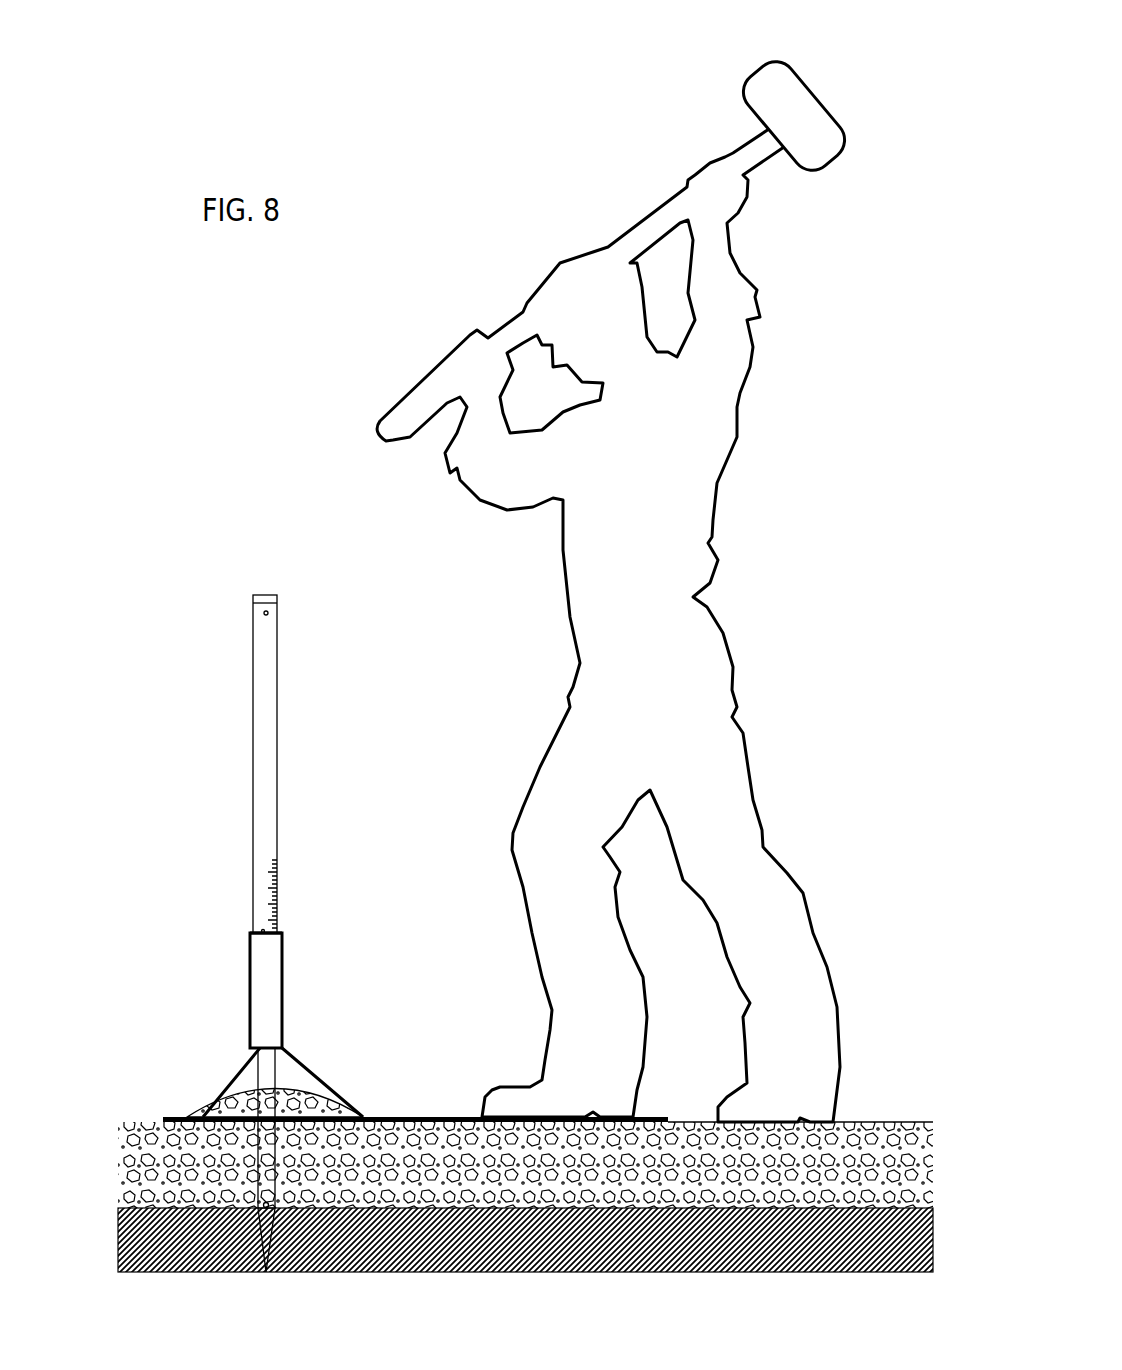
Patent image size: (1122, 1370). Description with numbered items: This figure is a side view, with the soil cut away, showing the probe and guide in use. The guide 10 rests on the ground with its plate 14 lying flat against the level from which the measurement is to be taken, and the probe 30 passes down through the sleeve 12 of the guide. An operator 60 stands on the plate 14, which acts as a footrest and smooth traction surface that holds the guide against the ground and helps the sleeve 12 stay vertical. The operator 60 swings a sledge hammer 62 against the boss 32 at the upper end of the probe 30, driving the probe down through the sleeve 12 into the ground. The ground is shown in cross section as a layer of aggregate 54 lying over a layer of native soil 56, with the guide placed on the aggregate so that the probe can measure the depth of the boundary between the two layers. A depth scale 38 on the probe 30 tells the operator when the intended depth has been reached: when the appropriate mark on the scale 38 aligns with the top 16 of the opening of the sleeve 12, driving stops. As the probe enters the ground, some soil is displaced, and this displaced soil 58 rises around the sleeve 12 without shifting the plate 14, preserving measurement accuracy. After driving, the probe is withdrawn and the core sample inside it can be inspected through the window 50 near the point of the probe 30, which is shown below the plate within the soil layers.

The guide 10 is at (406, 916).
The sleeve 12 is at (226, 978).
The plate 14 is at (663, 1117).
The top of the opening of the sleeve 16 is at (250, 933).
The probe 30 is at (250, 746).
The boss 32 is at (270, 595).
The depth scale 38 is at (279, 896).
The window 50 is at (281, 1198).
The layer of aggregate 54 is at (197, 1170).
The layer of native soil 56 is at (150, 1250).
The displaced soil 58 is at (237, 1107).
The operator 60 is at (632, 574).
The sledge hammer 62 is at (800, 113).